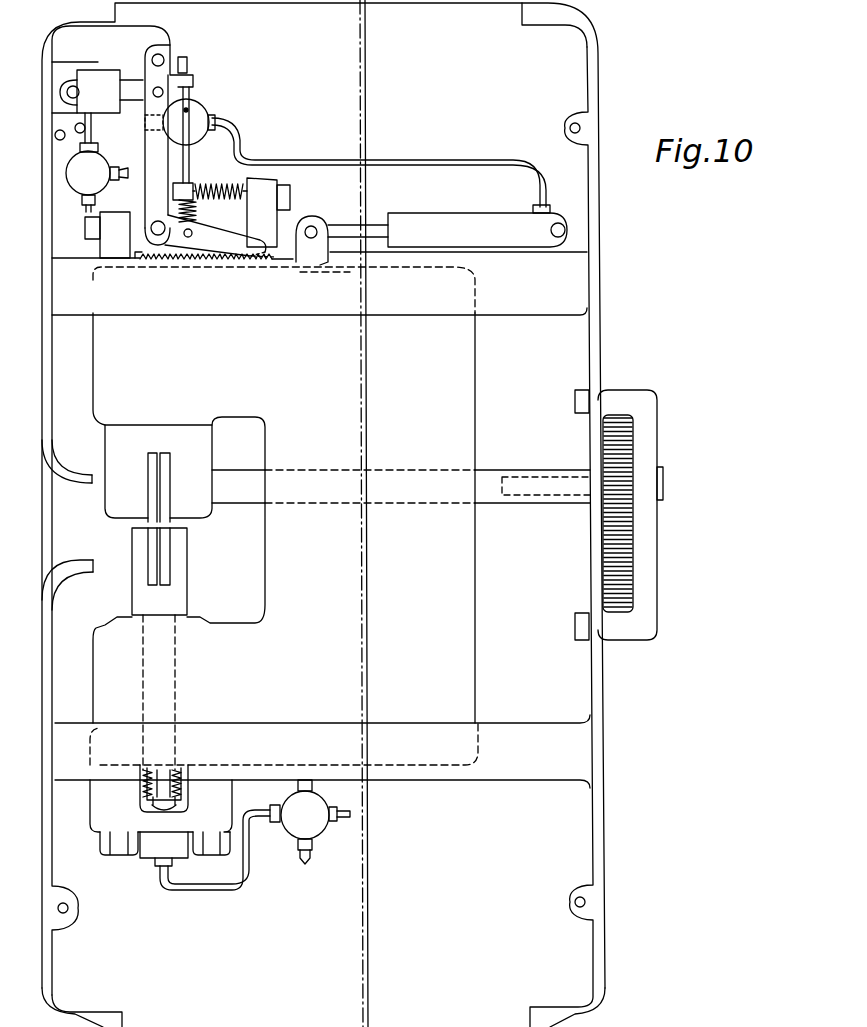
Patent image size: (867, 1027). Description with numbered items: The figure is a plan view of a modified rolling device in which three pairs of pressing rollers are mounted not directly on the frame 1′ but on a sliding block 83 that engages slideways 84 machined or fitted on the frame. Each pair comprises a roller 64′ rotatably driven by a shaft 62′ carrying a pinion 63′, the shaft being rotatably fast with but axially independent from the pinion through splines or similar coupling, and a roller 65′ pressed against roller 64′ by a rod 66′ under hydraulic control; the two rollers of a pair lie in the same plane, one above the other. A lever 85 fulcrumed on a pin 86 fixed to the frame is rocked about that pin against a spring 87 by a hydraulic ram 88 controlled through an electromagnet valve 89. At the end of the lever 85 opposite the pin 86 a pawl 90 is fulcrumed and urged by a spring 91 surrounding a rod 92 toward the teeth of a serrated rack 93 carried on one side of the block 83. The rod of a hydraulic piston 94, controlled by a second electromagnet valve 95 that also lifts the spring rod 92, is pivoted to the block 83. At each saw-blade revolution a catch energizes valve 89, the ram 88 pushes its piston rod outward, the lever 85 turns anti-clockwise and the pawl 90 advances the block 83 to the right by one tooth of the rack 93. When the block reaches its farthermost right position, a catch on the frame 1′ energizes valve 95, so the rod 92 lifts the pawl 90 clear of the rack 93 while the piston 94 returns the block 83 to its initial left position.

The frame 1′ is at (600, 841).
The shaft 62′ is at (492, 468).
The pinion 63′ is at (613, 430).
The roller 64′ is at (165, 472).
The roller 65′ is at (165, 571).
The rod 66′ is at (178, 690).
The sliding block 83 is at (284, 518).
The slideways 84 is at (532, 288).
The lever 85 is at (150, 146).
The pin 86 is at (165, 56).
The spring 87 is at (222, 196).
The hydraulic ram 88 is at (96, 80).
The electromagnet valve 89 is at (80, 180).
The pawl 90 is at (207, 243).
The spring 91 is at (192, 212).
The rod 92 is at (195, 106).
The serrated rack 93 is at (228, 258).
The hydraulic piston 94 is at (437, 222).
The electromagnet valve 95 is at (200, 134).